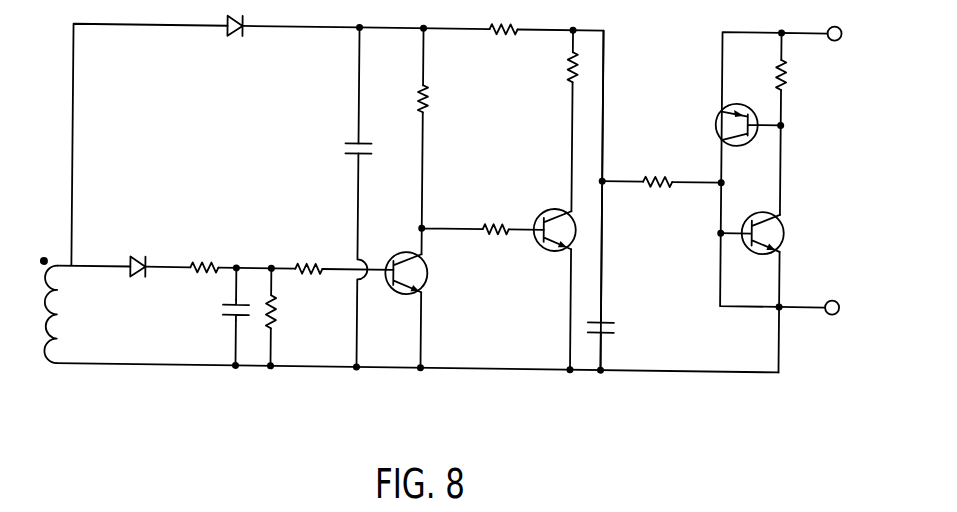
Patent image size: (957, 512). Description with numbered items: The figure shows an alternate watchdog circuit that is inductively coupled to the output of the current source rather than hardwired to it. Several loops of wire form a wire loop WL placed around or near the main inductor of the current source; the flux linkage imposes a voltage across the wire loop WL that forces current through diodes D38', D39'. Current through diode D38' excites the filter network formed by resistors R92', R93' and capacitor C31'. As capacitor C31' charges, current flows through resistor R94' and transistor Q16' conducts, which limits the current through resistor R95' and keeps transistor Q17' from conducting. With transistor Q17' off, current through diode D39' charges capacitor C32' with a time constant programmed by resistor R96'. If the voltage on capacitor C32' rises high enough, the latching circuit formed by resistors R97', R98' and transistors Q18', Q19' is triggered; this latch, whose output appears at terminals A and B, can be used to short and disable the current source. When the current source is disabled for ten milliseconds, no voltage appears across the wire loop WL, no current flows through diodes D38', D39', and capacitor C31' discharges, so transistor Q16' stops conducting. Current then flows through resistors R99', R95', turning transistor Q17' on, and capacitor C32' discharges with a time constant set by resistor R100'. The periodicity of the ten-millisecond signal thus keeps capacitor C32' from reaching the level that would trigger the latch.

The wire loop WL is at (59, 329).
The diode D39' is at (229, 41).
The diode D38' is at (131, 282).
The resistor R92' is at (208, 254).
The capacitor C31' is at (218, 310).
The resistor R93' is at (290, 312).
The resistor R94' is at (312, 256).
The transistor Q16' is at (402, 285).
The resistor R99' is at (406, 98).
The resistor R96' is at (505, 45).
The resistor R100' is at (552, 67).
The resistor R95' is at (498, 215).
The transistor Q17' is at (551, 219).
The capacitor C32' is at (614, 315).
The resistor R97' is at (659, 168).
The transistor Q18' is at (730, 124).
The resistor R98' is at (798, 75).
The transistor Q19' is at (768, 242).
The output terminal A is at (845, 35).
The output terminal B is at (842, 310).